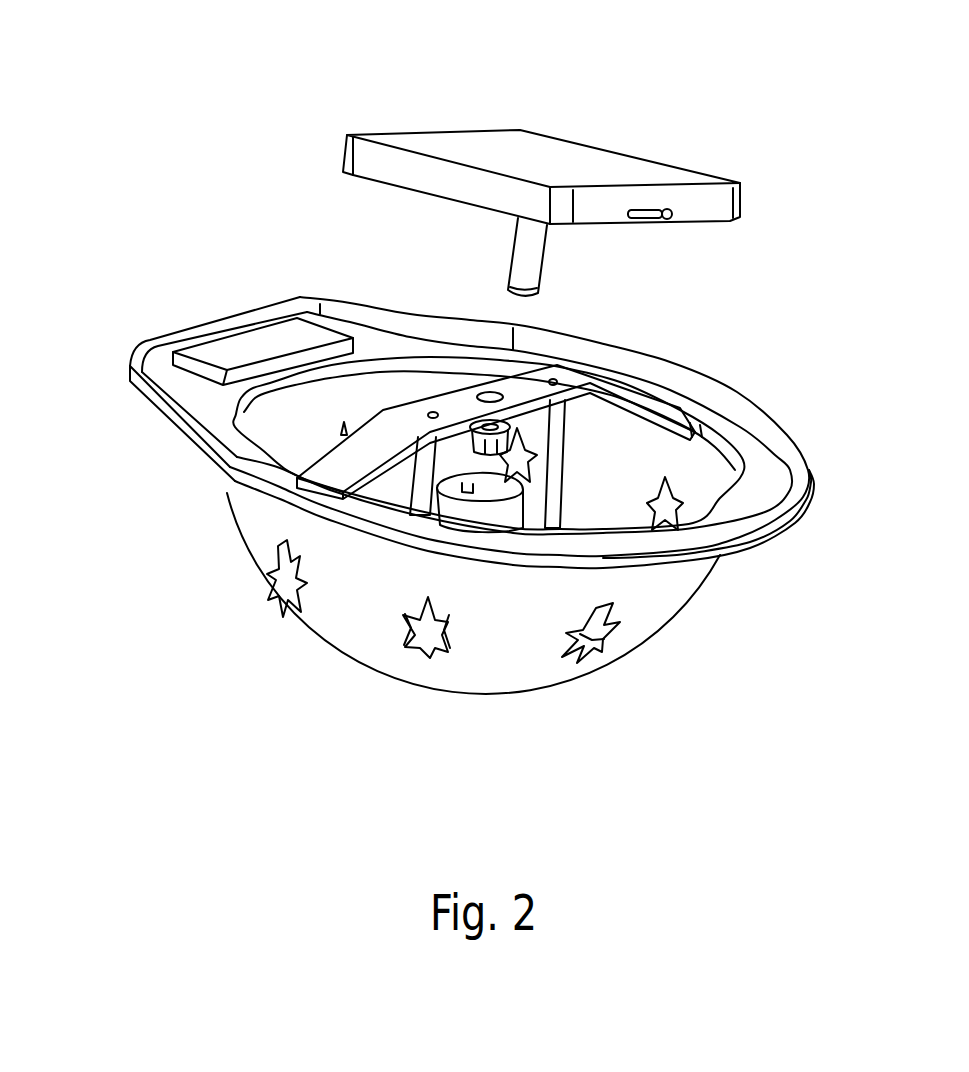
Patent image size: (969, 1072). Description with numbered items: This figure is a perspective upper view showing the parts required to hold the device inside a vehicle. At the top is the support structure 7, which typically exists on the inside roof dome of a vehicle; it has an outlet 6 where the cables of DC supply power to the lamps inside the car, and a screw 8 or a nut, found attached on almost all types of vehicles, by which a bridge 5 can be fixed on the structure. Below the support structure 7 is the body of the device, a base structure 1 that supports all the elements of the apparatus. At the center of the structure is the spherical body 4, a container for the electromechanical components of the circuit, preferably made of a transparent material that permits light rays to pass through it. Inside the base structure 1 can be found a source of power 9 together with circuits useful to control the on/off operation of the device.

The base structure 1 is at (193, 323).
The spherical body 4 is at (260, 525).
The bridge 5 is at (587, 380).
The outlet 6 is at (667, 212).
The support structure 7 is at (533, 147).
The screw 8 is at (523, 248).
The source of power 9 is at (280, 333).